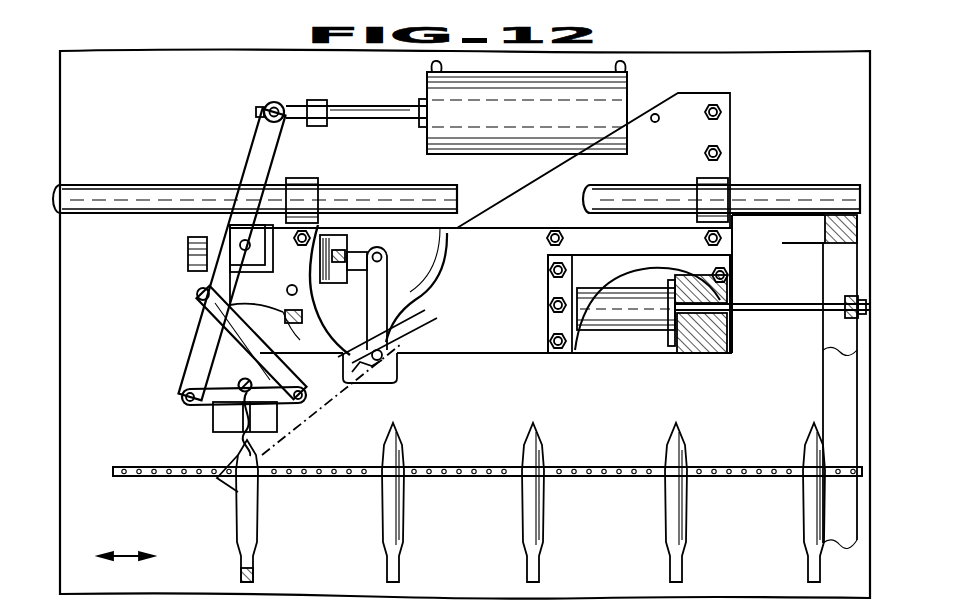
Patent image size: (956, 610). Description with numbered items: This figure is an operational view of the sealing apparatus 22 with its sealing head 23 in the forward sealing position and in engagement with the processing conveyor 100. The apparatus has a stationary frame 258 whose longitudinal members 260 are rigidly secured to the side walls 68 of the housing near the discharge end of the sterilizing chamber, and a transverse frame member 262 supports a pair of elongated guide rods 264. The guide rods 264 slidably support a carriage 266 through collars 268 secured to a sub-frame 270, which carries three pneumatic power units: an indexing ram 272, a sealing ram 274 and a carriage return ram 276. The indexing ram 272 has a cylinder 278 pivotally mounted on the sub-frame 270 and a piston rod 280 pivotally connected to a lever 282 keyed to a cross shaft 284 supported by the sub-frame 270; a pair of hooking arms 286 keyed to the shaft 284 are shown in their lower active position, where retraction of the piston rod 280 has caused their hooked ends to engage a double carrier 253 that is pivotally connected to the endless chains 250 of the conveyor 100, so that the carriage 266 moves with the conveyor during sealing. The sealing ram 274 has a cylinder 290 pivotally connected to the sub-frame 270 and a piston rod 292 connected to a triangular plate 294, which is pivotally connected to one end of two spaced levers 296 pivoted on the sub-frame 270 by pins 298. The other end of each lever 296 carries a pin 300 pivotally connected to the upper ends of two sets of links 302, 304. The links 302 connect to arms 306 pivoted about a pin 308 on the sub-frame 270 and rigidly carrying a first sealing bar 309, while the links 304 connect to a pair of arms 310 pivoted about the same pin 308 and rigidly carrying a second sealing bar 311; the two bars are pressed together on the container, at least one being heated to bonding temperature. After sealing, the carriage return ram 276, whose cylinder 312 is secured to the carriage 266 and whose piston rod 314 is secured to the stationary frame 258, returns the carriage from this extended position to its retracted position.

The side walls 68 is at (800, 62).
The sealing apparatus 22 is at (156, 298).
The sealing head 23 is at (160, 392).
The processing conveyor 100 is at (465, 473).
The endless chains 250 is at (203, 479).
The double carriers 253 is at (252, 545).
The frame 258 is at (822, 403).
The longitudinal members 260 is at (787, 215).
The transverse frame members 262 is at (828, 243).
The guide rods 264 is at (583, 203).
The carriage 266 is at (516, 356).
The collars 268 is at (312, 186).
The sub-frame 270 is at (455, 228).
The indexing ram 272 is at (186, 265).
The sealing ram 274 is at (636, 86).
The carriage return ram 276 is at (632, 342).
The cylinder 278 is at (187, 246).
The piston rod 280 is at (349, 241).
The lever 282 is at (392, 316).
The cross shaft 284 is at (398, 367).
The hooking arms 286 is at (238, 487).
The cylinder 290 is at (474, 119).
The piston rod 292 is at (362, 106).
The triangular plate 294 is at (284, 100).
The levers 296 is at (250, 155).
The pins 298 is at (240, 243).
The pin 300 is at (198, 298).
The links 302 is at (228, 328).
The links 304 is at (188, 353).
The arms 306 is at (305, 414).
The pin 308 is at (292, 332).
The first sealing bar 309 is at (280, 440).
The arms 310 is at (205, 408).
The second sealing bar 311 is at (226, 430).
The cylinder 312 is at (550, 300).
The piston rod 314 is at (808, 308).